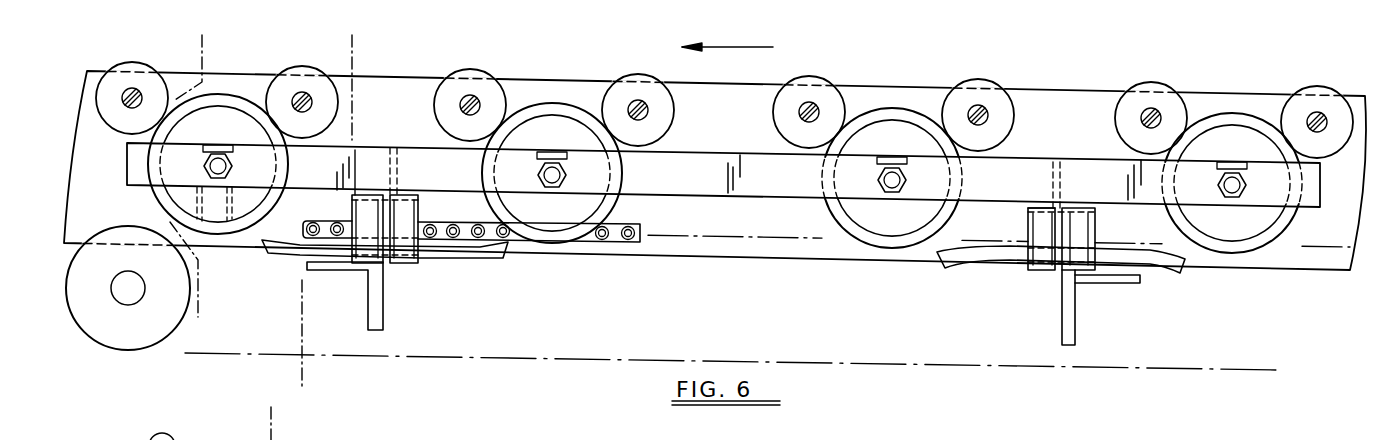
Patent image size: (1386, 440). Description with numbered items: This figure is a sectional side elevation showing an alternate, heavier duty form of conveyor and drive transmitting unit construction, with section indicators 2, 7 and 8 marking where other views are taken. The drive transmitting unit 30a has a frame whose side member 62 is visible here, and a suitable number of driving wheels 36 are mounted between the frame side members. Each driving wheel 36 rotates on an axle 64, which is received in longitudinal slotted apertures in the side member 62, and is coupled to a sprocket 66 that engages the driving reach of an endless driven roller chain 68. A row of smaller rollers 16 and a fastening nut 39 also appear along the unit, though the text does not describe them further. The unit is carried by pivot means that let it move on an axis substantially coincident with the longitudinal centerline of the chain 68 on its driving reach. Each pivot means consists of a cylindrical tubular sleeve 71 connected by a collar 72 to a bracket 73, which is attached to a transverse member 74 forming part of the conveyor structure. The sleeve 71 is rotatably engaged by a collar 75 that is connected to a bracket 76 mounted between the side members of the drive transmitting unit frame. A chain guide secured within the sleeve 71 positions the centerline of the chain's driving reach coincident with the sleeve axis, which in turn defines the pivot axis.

The section line 2- 2 is at (305, 425).
The section line 7- 7 is at (202, 45).
The section line 8- 8 is at (352, 48).
The guide roller 16 is at (832, 84).
The drive transmitting unit 30a is at (724, 199).
The driving wheel 36 is at (866, 153).
The nut 39 is at (904, 183).
The frame side member 62 is at (720, 155).
The axle 64 is at (876, 186).
The sprocket 66 is at (1235, 117).
The endless driven roller chain 68 is at (612, 358).
The cylindrical tubular sleeve 71 is at (1030, 268).
The collar 72 is at (1096, 230).
The bracket 73 is at (1061, 306).
The transverse member 74 is at (1077, 318).
The collar 75 is at (1030, 209).
The bracket 76 is at (1063, 190).